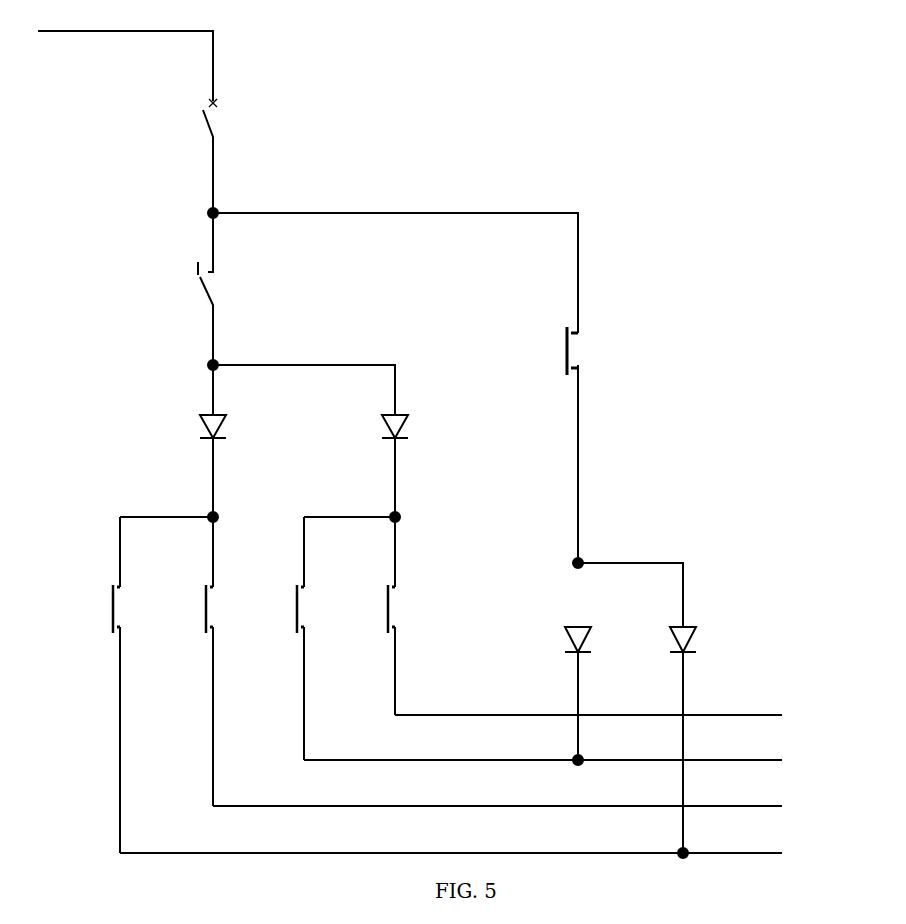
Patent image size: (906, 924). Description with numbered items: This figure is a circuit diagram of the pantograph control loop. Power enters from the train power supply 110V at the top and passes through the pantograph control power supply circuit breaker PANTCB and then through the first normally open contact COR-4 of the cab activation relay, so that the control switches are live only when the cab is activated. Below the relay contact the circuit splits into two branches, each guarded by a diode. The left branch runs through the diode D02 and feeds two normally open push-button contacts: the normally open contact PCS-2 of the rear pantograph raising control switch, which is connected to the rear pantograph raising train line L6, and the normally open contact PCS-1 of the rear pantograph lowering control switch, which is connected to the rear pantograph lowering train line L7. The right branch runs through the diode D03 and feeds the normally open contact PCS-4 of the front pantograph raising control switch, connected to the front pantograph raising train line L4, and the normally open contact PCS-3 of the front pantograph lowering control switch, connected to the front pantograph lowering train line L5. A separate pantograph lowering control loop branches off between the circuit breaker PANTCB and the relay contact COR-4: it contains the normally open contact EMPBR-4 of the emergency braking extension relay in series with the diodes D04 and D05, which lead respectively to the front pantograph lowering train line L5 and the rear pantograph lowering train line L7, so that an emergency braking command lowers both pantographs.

The 110 V power supply line 110V is at (125, 54).
The pantograph control power supply circuit breaker PANTCB is at (170, 153).
The first normally open contact of cab activation relay COR-4 is at (174, 289).
The normally open contact of emergency braking extension relay EMPBR-4 is at (530, 442).
The diode D02 is at (200, 441).
The diode D03 is at (382, 454).
The diode D04 is at (557, 691).
The diode D05 is at (662, 737).
The normally open contact of rear pantograph lowering control switch PCS-1 is at (86, 685).
The normally open contact of rear pantograph raising control switch PCS-2 is at (180, 661).
The normally open contact of front pantograph lowering control switch PCS-3 is at (271, 638).
The normally open contact of front pantograph raising control switch PCS-4 is at (362, 616).
The front pantograph raising train line L4 is at (588, 700).
The front pantograph lowering train line L5 is at (543, 750).
The rear pantograph raising train line L6 is at (497, 793).
The rear pantograph lowering train line L7 is at (451, 842).